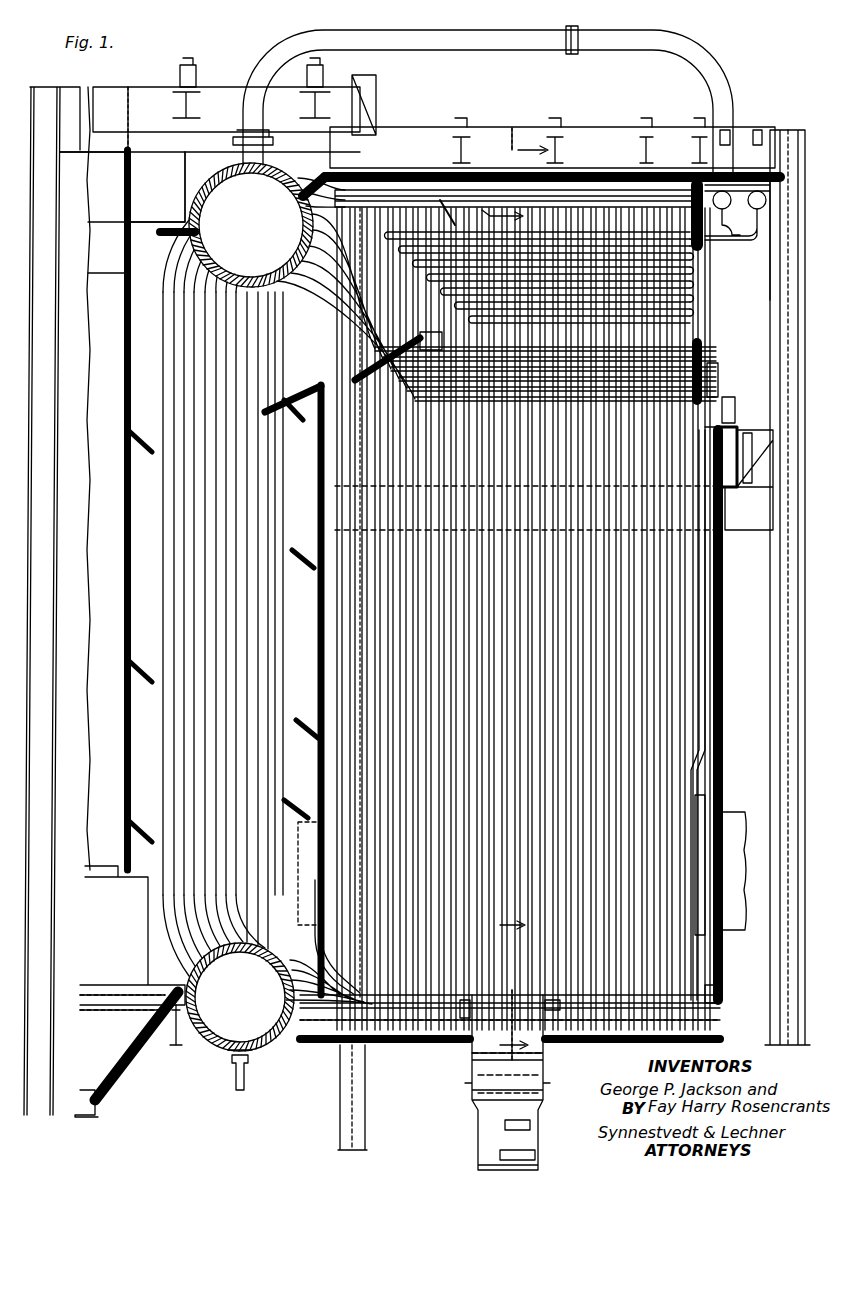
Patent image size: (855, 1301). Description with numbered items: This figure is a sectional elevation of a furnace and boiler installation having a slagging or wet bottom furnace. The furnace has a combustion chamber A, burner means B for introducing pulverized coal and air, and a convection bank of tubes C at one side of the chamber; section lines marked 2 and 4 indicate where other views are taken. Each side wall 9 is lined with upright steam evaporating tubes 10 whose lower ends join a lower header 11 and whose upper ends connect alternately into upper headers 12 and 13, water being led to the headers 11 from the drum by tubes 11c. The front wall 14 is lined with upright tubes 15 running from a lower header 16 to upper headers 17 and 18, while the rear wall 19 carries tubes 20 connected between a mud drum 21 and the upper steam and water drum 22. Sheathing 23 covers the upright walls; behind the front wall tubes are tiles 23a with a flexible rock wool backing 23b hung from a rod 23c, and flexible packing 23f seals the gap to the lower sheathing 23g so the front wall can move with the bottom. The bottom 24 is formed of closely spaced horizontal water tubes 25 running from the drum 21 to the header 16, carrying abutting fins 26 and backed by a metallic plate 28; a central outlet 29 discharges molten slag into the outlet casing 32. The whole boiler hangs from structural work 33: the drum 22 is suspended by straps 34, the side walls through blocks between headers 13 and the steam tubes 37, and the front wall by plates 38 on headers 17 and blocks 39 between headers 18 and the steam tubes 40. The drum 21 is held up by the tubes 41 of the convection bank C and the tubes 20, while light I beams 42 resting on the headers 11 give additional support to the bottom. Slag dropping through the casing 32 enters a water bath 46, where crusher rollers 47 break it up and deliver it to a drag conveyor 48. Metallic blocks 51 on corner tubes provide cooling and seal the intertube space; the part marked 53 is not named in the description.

The side wall 9 is at (672, 585).
The upright steam evaporating tubes 10 is at (660, 550).
The lower header 11 is at (700, 1044).
The tubes 11c is at (433, 1020).
The upper header 12 is at (570, 198).
The upper header 13 is at (612, 188).
The front wall 14 is at (726, 717).
The upright steam evaporating tubes 15 is at (704, 694).
The lower header 16 is at (723, 1000).
The upper header 17 is at (740, 400).
The upper header 18 is at (716, 365).
The rear wall 19 is at (290, 593).
The upright steam evaporating tubes 20 is at (335, 630).
The mud drum 21 is at (240, 997).
The steam and water drum 22 is at (251, 225).
The sheathing 23 is at (320, 517).
The tiles 23a is at (726, 620).
The backing 23b is at (726, 744).
The rod 23c is at (726, 769).
The flexible packing material 23f is at (722, 960).
The lower sheathing 23g is at (722, 985).
The bottom 24 is at (405, 1020).
The water tubes 25 is at (392, 1010).
The fins 26 is at (598, 1040).
The backing plate 28 is at (660, 1015).
The central outlet 29 is at (490, 1012).
The outlet casing 32 is at (560, 1035).
The structural work 33 is at (532, 115).
The straps 34 is at (185, 176).
The lower set of tubes 37 is at (450, 205).
The plates 38 is at (738, 420).
The blocks 39 is at (727, 397).
The lower set of tubes 40 is at (650, 390).
The tubes of the convection bank 41 is at (162, 548).
The I beams 42 is at (462, 1018).
The water bath 46 is at (490, 1062).
The crusher rollers 47 is at (483, 1088).
The drag conveyor 48 is at (520, 1155).
The metallic blocks 51 is at (315, 950).
The block 53 is at (724, 990).
The combustion chamber A is at (664, 672).
The burner means B is at (300, 850).
The convection bank of tubes C is at (232, 484).
The section line 2 is at (506, 987).
The section line 4 is at (515, 174).